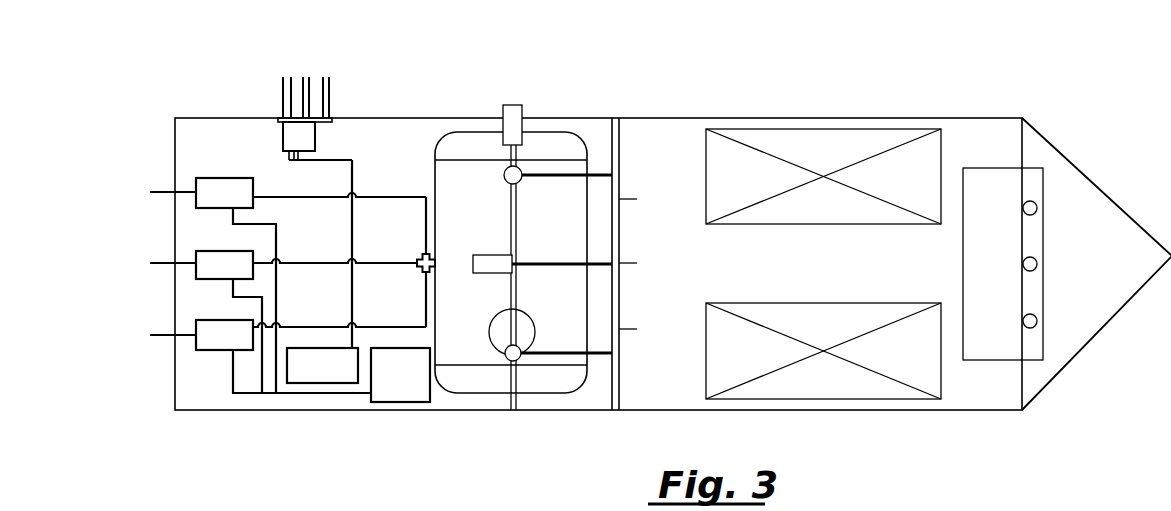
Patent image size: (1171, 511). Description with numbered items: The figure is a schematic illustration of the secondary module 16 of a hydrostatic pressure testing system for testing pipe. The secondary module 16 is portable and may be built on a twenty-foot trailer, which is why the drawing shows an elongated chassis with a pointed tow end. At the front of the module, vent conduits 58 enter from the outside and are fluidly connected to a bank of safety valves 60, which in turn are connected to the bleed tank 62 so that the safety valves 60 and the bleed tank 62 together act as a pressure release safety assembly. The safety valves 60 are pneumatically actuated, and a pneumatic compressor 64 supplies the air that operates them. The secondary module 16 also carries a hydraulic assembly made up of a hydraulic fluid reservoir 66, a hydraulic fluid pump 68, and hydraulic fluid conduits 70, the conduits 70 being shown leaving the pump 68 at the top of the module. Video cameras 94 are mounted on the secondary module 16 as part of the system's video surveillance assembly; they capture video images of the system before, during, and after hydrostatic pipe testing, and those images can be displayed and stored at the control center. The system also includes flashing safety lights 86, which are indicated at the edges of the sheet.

The secondary module 16 is at (556, 432).
The vent conduits 58 is at (163, 190).
The safety valves 60 is at (219, 183).
The bleed tank 62 is at (469, 317).
The pneumatic compressor 64 is at (393, 380).
The hydraulic fluid reservoir 66 is at (315, 367).
The hydraulic fluid pump 68 is at (293, 137).
The hydraulic fluid conduits 70 is at (284, 90).
The video cameras 94 is at (487, 257).
The flashing safety lights 86 is at (698, 500).